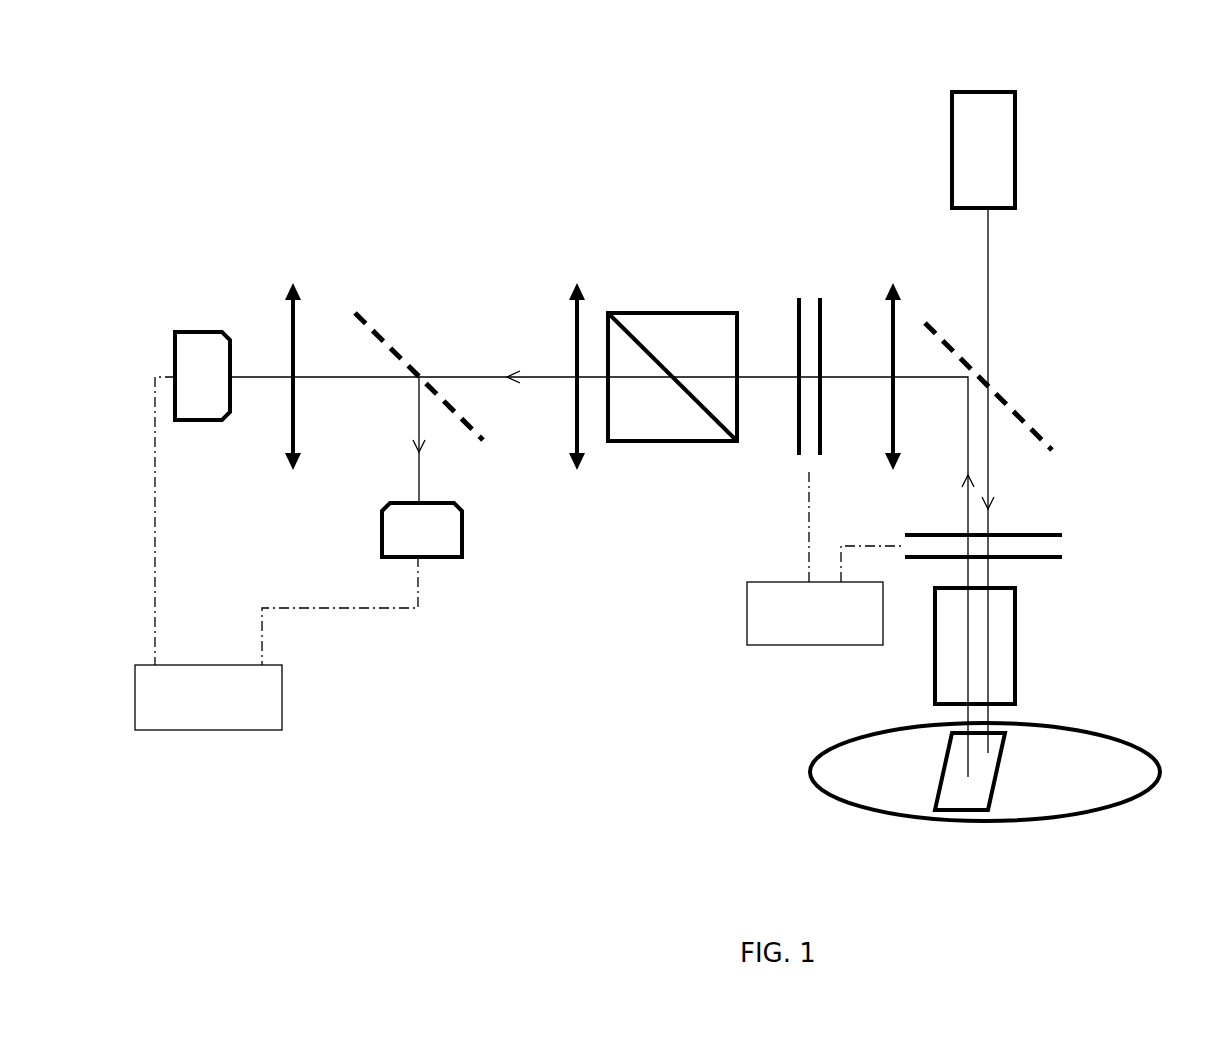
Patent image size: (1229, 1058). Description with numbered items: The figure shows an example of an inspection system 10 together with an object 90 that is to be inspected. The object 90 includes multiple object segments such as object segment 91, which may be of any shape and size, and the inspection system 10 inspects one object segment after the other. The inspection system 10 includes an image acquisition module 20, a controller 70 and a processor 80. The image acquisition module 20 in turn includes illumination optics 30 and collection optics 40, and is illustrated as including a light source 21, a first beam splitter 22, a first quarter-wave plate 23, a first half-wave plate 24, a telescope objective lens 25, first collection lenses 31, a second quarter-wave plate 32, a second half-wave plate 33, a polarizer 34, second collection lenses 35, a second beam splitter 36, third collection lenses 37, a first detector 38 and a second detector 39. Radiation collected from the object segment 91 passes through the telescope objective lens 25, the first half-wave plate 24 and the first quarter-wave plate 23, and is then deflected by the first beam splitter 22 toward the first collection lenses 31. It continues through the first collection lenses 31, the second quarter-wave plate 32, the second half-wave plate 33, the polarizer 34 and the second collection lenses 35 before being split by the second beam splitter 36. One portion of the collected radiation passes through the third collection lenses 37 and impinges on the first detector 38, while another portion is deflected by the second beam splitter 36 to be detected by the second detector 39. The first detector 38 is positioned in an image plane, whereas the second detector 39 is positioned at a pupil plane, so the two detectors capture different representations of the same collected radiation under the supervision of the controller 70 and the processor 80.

The inspection system 10 is at (362, 820).
The image acquisition module 20 is at (541, 537).
The light source 21 is at (1000, 163).
The first beam splitter 22 is at (1008, 397).
The first quarter-wave plate 23 is at (1053, 530).
The first half-wave plate 24 is at (1057, 561).
The telescope objective lens 25 is at (1000, 628).
The illumination optics 30 is at (1047, 127).
The first collection lenses 31 is at (890, 283).
The second quarter-wave plate 32 is at (818, 318).
The second half-wave plate 33 is at (795, 318).
The polarizer 34 is at (670, 325).
The second collection lenses 35 is at (572, 320).
The second beam splitter 36 is at (402, 352).
The third collection lenses 37 is at (303, 282).
The first detector 38 is at (200, 345).
The second detector 39 is at (440, 547).
The collection optics 40 is at (502, 228).
The controller 70 is at (815, 613).
The processor 80 is at (208, 697).
The object 90 is at (1065, 735).
The object segment 91 is at (982, 783).